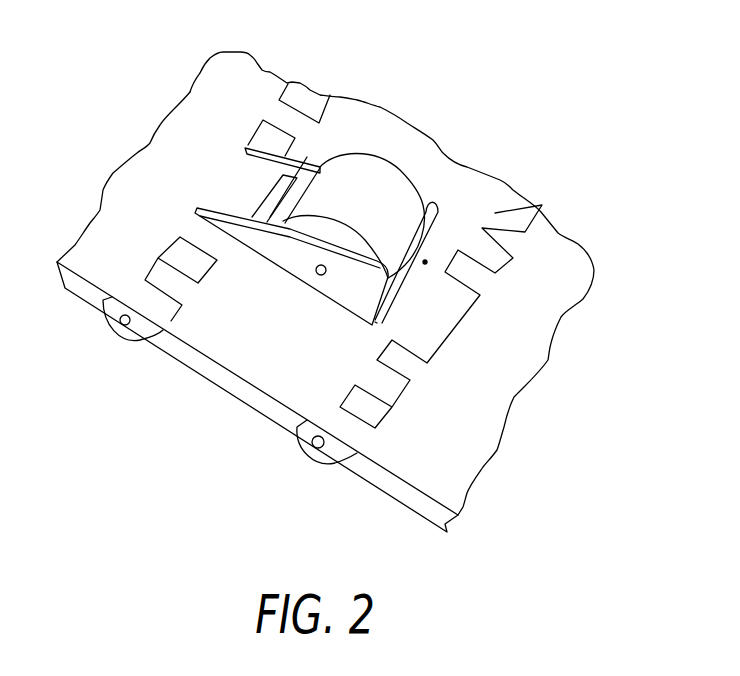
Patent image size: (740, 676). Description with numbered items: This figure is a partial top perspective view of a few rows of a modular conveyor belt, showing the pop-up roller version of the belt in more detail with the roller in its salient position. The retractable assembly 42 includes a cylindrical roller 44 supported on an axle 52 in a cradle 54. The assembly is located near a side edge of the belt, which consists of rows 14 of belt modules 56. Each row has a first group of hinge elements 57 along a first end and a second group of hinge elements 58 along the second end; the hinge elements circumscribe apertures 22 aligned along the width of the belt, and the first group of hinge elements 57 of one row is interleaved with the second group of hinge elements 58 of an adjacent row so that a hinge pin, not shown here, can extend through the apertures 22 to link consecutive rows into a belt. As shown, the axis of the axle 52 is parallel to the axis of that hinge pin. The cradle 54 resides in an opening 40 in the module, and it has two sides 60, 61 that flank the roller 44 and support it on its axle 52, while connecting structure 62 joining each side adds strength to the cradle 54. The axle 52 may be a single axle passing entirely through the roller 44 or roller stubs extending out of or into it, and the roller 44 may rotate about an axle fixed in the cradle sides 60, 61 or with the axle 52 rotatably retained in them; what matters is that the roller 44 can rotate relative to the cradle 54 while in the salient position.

The rows 14 is at (242, 400).
The apertures 22 is at (118, 334).
The opening 40 is at (375, 322).
The retractable assembly 42 is at (242, 233).
The cylindrical roller 44 is at (385, 190).
The axle 52 is at (317, 275).
The cradle 54 is at (318, 158).
The belt modules 56 is at (560, 262).
The first group of hinge elements 57 is at (163, 285).
The second group of hinge elements 58 is at (392, 390).
The side 60 is at (354, 293).
The side 61 is at (433, 200).
The connecting structure 62 is at (287, 196).